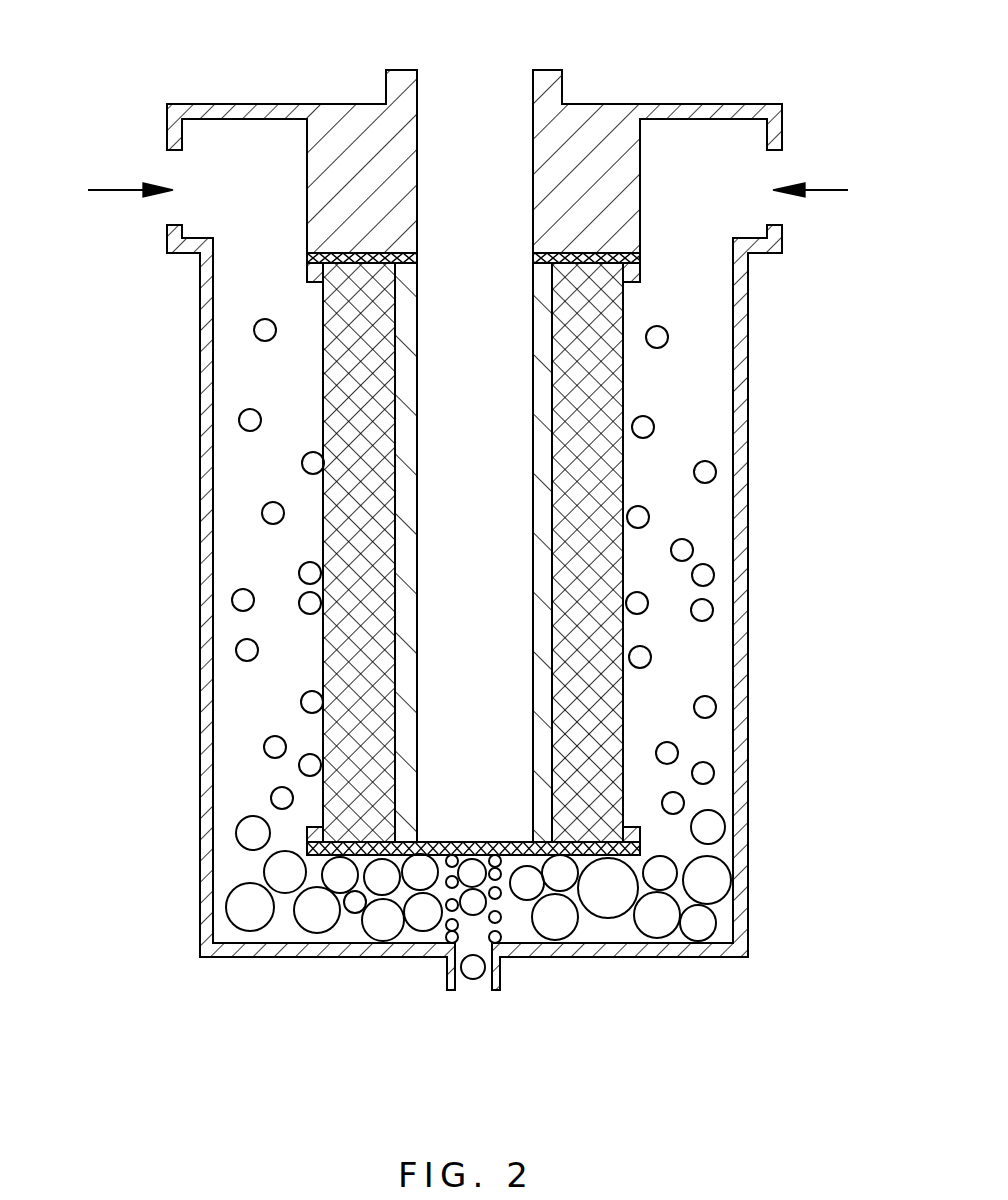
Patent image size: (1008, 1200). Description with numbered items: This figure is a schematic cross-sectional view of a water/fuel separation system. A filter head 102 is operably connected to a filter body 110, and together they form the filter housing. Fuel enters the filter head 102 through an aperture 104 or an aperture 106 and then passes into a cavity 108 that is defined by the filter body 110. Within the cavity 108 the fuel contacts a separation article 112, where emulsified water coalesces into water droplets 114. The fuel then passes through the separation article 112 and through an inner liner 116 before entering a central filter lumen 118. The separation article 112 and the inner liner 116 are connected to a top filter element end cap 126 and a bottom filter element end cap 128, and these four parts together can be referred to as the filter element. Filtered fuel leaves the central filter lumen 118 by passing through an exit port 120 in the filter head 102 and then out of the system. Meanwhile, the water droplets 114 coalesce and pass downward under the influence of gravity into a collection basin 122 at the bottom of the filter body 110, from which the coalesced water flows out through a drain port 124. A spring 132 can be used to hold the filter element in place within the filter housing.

The filter head 102 is at (357, 143).
The aperture 104 is at (108, 190).
The aperture 106 is at (829, 190).
The cavity 108 is at (284, 569).
The filter body 110 is at (210, 386).
The separation article 112 is at (345, 660).
The water droplets 114 is at (273, 513).
The inner liner 116 is at (401, 487).
The central filter lumen 118 is at (488, 576).
The exit port 120 is at (489, 119).
The collection basin 122 is at (220, 865).
The drain port 124 is at (472, 1015).
The top filter element end cap 126 is at (318, 258).
The bottom filter element end cap 128 is at (310, 845).
The spring 132 is at (520, 936).